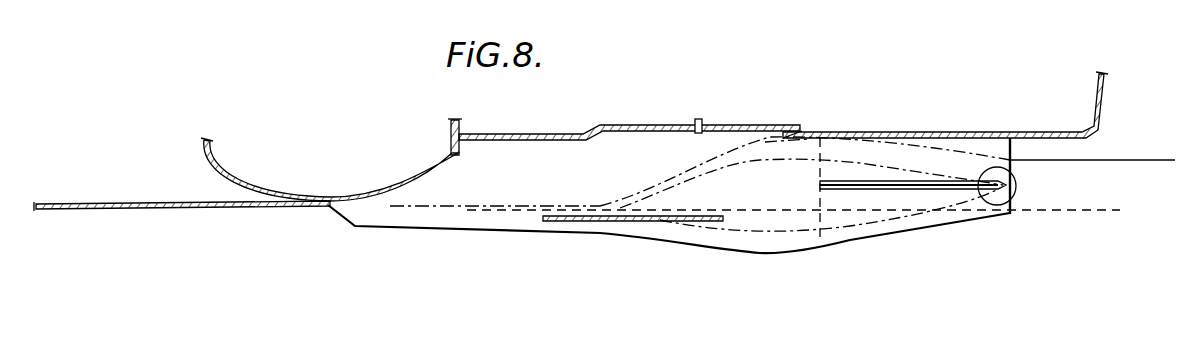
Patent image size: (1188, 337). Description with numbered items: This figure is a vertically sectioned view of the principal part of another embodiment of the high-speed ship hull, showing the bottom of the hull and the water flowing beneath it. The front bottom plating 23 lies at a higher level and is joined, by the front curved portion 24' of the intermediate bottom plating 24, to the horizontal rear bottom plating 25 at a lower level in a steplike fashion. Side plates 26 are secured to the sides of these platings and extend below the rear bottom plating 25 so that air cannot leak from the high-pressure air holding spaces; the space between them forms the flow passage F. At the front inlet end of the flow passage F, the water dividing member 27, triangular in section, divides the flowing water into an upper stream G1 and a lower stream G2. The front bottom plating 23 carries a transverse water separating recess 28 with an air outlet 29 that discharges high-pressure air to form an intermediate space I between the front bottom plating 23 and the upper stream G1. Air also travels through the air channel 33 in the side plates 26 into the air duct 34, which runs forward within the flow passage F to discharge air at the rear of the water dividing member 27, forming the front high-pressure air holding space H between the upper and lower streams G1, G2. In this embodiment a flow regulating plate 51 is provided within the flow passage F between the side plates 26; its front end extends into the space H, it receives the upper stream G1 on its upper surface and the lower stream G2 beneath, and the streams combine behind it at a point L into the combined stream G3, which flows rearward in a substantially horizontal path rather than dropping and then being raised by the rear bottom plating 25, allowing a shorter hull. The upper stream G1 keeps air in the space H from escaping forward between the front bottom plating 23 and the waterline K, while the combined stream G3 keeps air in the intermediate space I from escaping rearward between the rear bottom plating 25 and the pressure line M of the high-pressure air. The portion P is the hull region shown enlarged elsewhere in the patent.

The front bottom plating 23 is at (945, 105).
The intermediate bottom plating 24 is at (451, 235).
The front curved portion 24' is at (336, 169).
The rear bottom plating 25 is at (182, 237).
The side plates 26 is at (825, 277).
The water dividing member 27 is at (944, 186).
The water separating recess 28 is at (624, 150).
The air outlet 29 is at (727, 112).
The air channel 33 is at (827, 152).
The air duct 34 is at (852, 235).
The flow regulating plate 51 is at (633, 254).
The upper stream G1 is at (805, 172).
The lower stream G2 is at (830, 252).
The combined stream G3 is at (398, 253).
The front high-pressure air holding space H is at (788, 205).
The intermediate space I is at (556, 186).
The waterline K is at (1092, 130).
The point L is at (520, 255).
The pressure line M is at (489, 245).
The flow passage F is at (583, 260).
The portion P is at (805, 199).